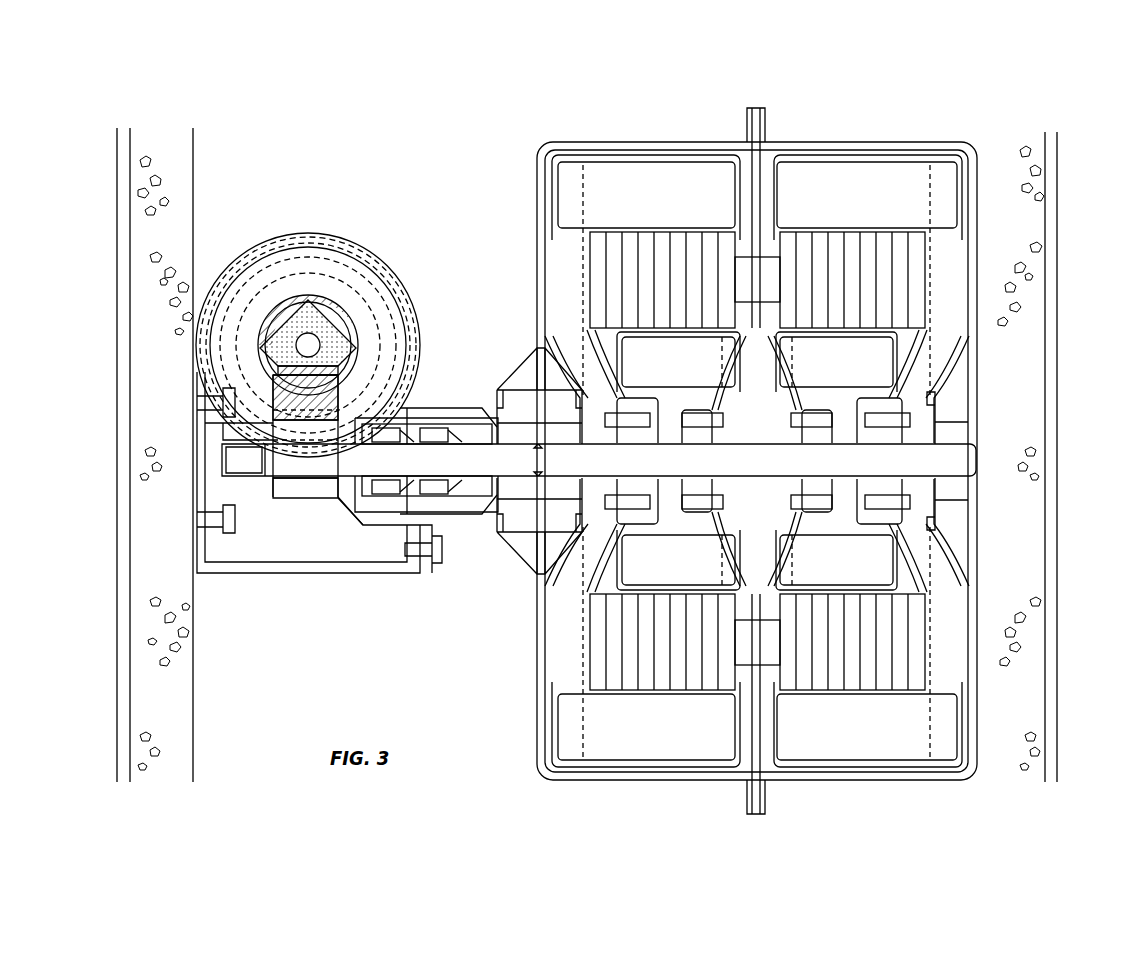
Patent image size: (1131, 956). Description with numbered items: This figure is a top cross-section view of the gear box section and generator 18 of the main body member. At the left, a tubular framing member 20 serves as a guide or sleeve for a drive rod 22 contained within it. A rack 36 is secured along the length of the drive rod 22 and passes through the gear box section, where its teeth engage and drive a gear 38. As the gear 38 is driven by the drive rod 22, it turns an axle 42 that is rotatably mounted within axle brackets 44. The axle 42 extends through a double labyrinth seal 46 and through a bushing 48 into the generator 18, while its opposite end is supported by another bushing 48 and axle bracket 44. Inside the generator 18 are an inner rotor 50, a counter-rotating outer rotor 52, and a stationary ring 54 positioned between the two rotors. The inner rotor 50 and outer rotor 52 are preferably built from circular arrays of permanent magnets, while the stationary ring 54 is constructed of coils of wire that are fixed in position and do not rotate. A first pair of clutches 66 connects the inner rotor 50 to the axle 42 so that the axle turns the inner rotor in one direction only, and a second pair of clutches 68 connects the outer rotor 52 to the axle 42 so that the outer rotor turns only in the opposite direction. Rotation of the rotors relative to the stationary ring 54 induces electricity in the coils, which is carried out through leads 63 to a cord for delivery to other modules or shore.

The generator 18 is at (537, 160).
The tubular framing member 20 is at (290, 237).
The drive rod 22 is at (270, 308).
The rack 36 is at (268, 390).
The gear 38 is at (284, 505).
The axle 42 is at (492, 453).
The axle bracket 44 is at (212, 500).
The double labyrinth seal 46 is at (455, 503).
The bushing 48 is at (950, 490).
The inner rotor 50 is at (627, 158).
The outer rotor 52 is at (966, 185).
The stationary ring 54 is at (782, 270).
The leads 63 is at (764, 62).
The first pair of clutches 66 is at (800, 437).
The second pair of clutches 68 is at (621, 437).